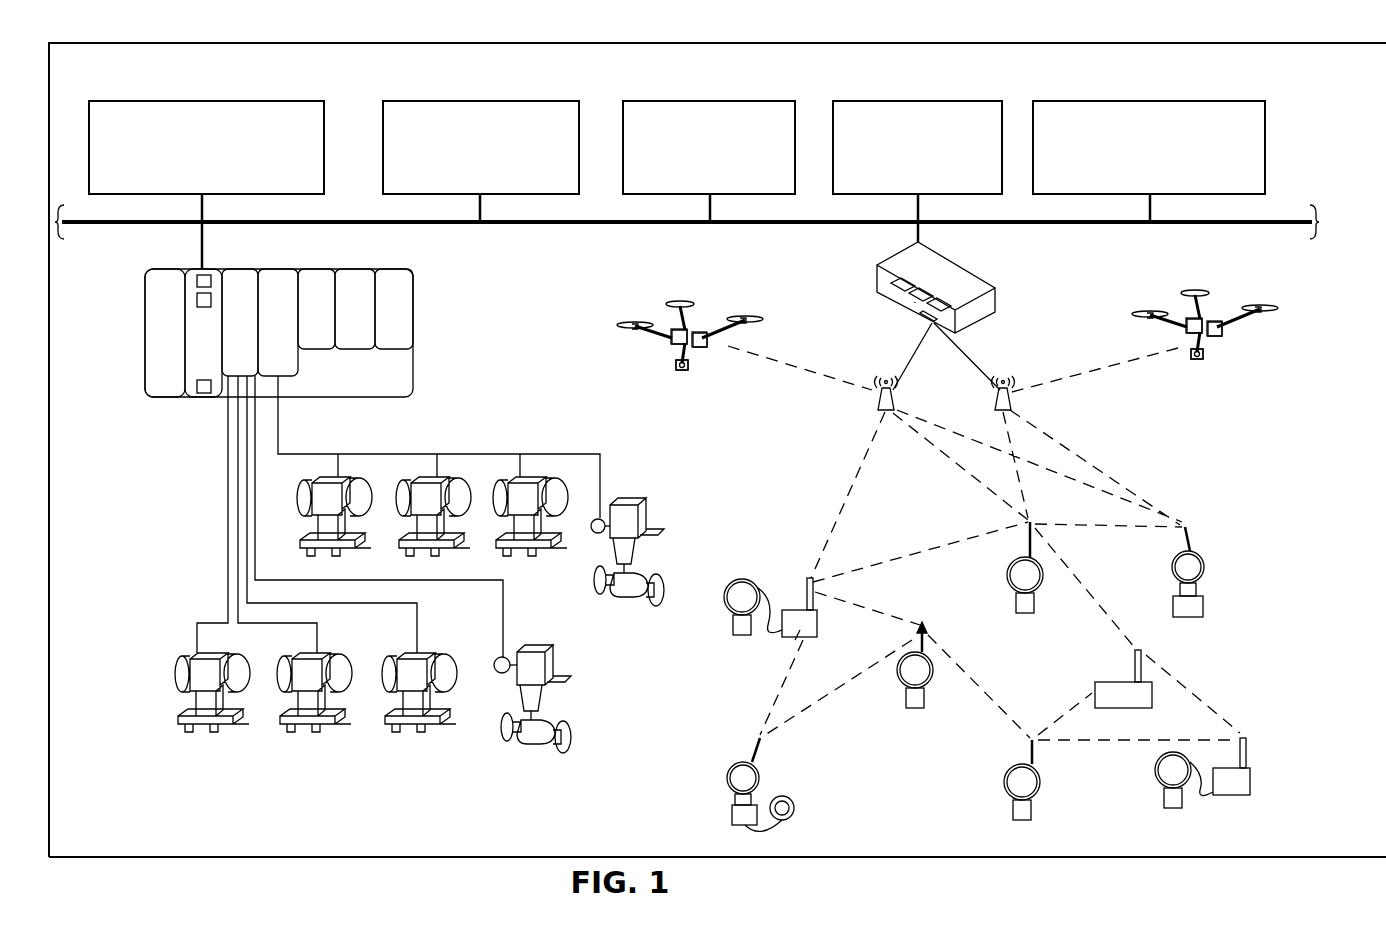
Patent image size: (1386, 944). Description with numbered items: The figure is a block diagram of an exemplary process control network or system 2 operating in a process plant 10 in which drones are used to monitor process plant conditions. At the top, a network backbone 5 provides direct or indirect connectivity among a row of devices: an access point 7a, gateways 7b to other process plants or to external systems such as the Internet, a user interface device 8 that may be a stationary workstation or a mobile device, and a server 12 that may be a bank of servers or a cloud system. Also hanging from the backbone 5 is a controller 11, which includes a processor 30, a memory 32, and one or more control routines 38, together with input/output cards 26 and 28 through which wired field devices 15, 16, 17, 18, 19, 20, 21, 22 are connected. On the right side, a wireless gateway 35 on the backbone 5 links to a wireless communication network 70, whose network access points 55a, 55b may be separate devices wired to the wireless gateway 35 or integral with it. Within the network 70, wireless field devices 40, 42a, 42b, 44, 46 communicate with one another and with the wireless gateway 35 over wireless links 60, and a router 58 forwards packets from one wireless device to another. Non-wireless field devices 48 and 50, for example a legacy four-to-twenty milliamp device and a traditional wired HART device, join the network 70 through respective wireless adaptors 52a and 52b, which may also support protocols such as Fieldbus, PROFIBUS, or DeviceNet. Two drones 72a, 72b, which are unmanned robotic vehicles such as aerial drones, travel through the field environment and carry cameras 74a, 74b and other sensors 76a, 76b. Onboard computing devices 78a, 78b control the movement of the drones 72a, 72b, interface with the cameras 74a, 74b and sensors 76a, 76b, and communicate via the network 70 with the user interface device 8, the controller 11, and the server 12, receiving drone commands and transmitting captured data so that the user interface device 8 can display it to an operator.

The process control network 2 is at (1325, 134).
The network backbone 5 is at (520, 226).
The access point 7a is at (730, 100).
The gateway 7b is at (205, 100).
The user interface device 8 is at (537, 100).
The process plant 10 is at (818, 39).
The controller 11 is at (259, 331).
The server 12 is at (926, 100).
The wired field device 15 is at (182, 692).
The wired field device 16 is at (284, 692).
The wired field device 17 is at (389, 692).
The wired field device 18 is at (516, 700).
The wired field device 19 is at (340, 460).
The wired field device 20 is at (438, 460).
The wired field device 21 is at (534, 460).
The wired field device 22 is at (630, 503).
The input/output card 26 is at (238, 282).
The input/output card 28 is at (276, 282).
The processor 30 is at (197, 281).
The memory 32 is at (197, 300).
The wireless gateway 35 is at (997, 298).
The control routine 38 is at (204, 397).
The wireless field device 40 is at (797, 812).
The wireless field device 42a is at (898, 692).
The wireless field device 42b is at (1008, 592).
The wireless field device 44 is at (1005, 786).
The wireless field device 46 is at (1205, 608).
The field device 48 is at (742, 578).
The field device 50 is at (1157, 786).
The wireless adaptor 52a is at (819, 624).
The wireless adaptor 52b is at (1230, 796).
The network access point 55a is at (878, 396).
The network access point 55b is at (995, 396).
The router 58 is at (1122, 684).
The wireless link 60 is at (797, 352).
The wireless communication network 70 is at (1117, 452).
The drone 72a is at (698, 340).
The drone 72b is at (1205, 337).
The camera 74a is at (678, 372).
The camera 74b is at (1197, 362).
The sensor 76a is at (708, 352).
The sensor 76b is at (1220, 345).
The onboard computing device 78a is at (686, 330).
The onboard computing device 78b is at (1190, 320).